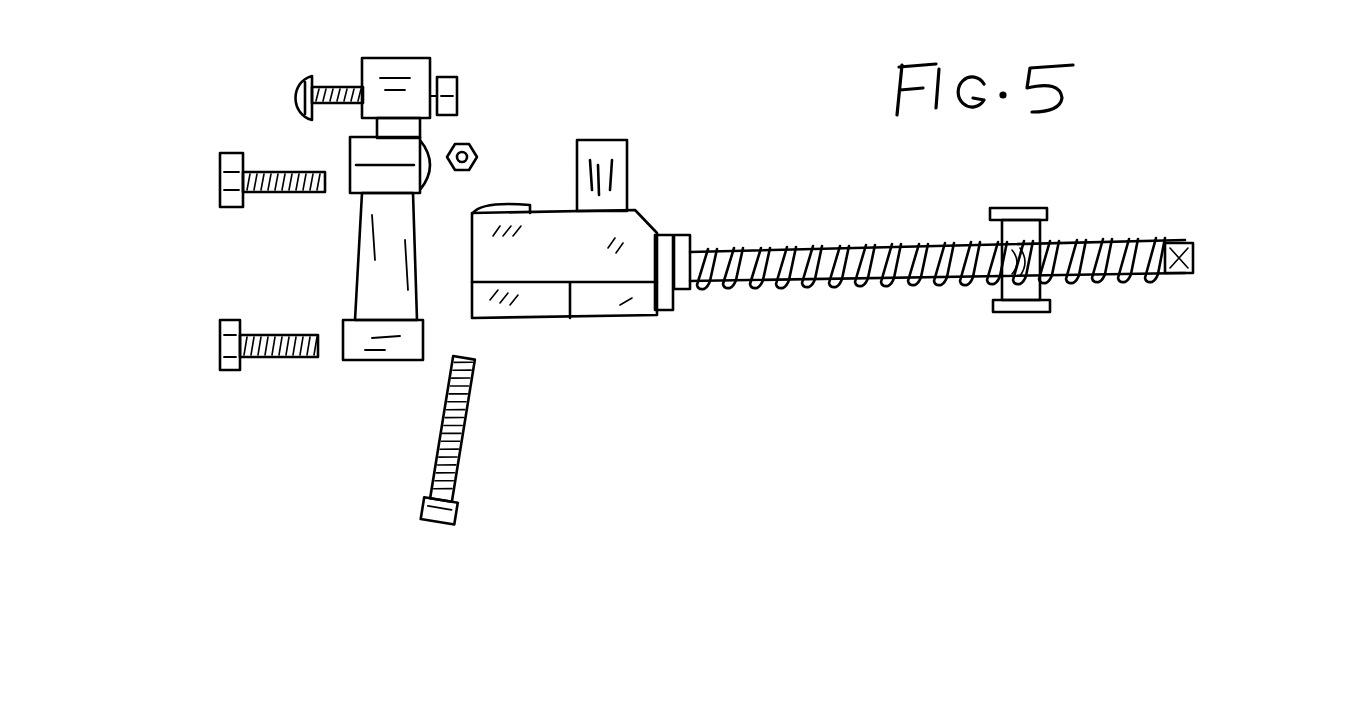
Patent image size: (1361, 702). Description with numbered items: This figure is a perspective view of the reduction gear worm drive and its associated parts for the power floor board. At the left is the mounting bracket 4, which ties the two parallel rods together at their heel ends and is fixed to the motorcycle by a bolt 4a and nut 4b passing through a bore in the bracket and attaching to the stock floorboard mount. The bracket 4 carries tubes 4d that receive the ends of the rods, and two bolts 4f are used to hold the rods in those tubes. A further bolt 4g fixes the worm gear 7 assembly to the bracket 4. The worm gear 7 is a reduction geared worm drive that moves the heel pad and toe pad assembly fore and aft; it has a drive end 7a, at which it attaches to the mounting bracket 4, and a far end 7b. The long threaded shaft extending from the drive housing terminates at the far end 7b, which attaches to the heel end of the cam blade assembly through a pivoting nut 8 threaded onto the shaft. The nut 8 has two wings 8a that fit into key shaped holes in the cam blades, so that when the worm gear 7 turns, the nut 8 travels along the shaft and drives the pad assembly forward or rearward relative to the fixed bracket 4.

The mounting bracket 4 is at (372, 362).
The bolt 4a is at (450, 77).
The nut 4b is at (292, 93).
The tubes 4d is at (440, 150).
The bolts 4f is at (205, 340).
The bolt 4g is at (425, 524).
The worm gear 7 is at (724, 93).
The drive end 7a is at (703, 303).
The far end 7b is at (1196, 250).
The pivoting nut 8 is at (1045, 240).
The wings 8a is at (1030, 206).